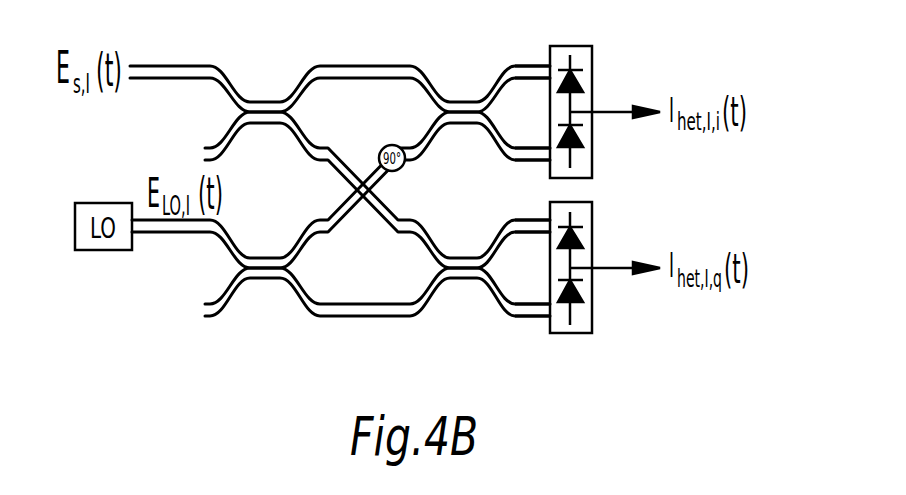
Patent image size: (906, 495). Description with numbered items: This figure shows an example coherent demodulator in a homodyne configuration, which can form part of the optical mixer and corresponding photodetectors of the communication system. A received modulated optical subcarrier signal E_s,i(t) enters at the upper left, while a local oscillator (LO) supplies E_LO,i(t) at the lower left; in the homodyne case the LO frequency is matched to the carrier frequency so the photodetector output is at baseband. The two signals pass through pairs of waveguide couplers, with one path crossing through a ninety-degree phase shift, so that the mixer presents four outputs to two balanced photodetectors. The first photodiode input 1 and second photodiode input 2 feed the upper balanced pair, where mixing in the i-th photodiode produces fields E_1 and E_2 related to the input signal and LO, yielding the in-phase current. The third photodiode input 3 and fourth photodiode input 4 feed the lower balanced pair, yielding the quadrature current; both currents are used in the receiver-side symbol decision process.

The first photodiode input 1 is at (531, 51).
The second photodiode input 2 is at (531, 135).
The third photodiode input 3 is at (531, 207).
The fourth photodiode input 4 is at (531, 291).